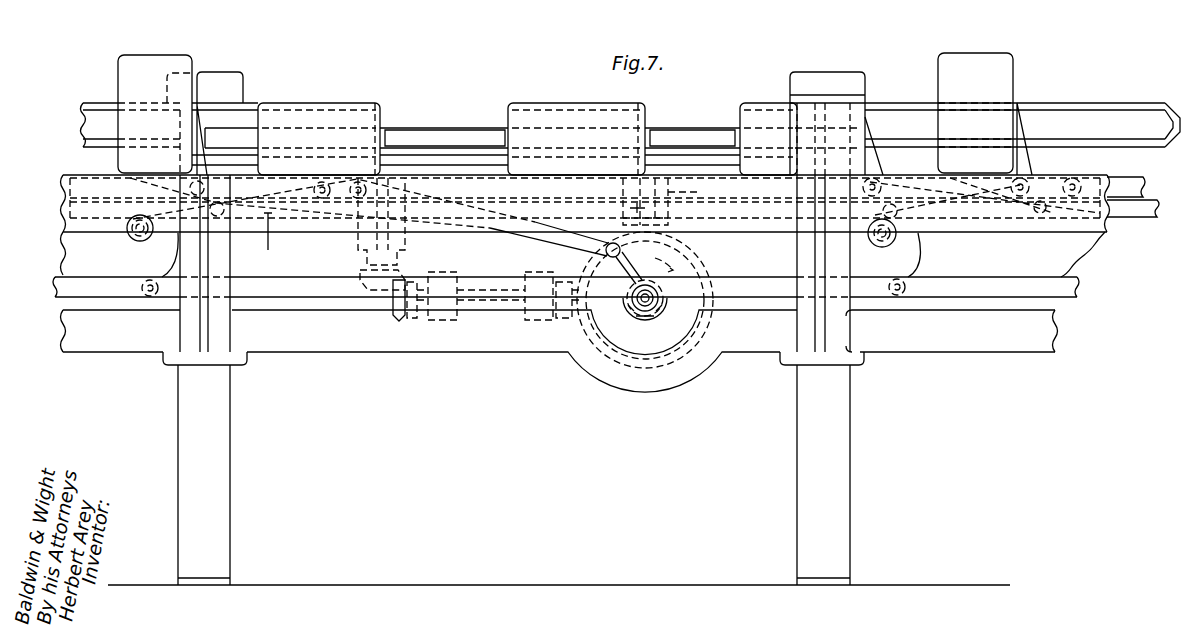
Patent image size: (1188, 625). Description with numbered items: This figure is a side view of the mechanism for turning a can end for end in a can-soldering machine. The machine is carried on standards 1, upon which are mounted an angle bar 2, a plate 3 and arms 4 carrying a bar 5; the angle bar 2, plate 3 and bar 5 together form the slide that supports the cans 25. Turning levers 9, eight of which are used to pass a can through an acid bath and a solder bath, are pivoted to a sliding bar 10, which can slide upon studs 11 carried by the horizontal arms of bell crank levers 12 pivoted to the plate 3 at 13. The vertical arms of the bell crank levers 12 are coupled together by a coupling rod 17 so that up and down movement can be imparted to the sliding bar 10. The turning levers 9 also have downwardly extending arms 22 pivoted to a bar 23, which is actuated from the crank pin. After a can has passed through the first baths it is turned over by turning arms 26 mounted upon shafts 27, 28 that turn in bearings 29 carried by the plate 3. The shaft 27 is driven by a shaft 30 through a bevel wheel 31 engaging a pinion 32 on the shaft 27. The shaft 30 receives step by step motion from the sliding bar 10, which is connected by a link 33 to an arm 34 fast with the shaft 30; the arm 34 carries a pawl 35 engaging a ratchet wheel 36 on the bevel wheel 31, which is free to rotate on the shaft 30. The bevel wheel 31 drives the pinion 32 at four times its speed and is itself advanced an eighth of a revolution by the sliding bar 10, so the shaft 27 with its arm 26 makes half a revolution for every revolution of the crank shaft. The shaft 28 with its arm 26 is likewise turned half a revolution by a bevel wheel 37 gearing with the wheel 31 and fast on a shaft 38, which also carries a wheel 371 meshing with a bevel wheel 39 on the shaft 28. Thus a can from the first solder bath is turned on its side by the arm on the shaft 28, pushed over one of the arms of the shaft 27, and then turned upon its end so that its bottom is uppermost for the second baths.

The standards 1 is at (222, 415).
The angle bar 2 is at (99, 118).
The plate 3 is at (80, 253).
The arms 4 is at (212, 255).
The bar 5 is at (63, 177).
The turning levers 9 is at (200, 130).
The sliding bar 10 is at (88, 178).
The studs 11 is at (323, 200).
The bell crank levers 12 is at (930, 243).
The pivot 13 is at (142, 278).
The coupling rod 17 is at (112, 288).
The downwardly extending arms 22 is at (875, 234).
The bar 23 is at (87, 222).
The cans 25 is at (182, 65).
The turning arms 26 is at (302, 130).
The shaft 27 is at (630, 208).
The shaft 28 is at (405, 245).
The bearings 29 is at (358, 210).
The shaft 30 is at (652, 307).
The bevel wheel 31 is at (703, 268).
The pinion 32 is at (665, 235).
The link 33 is at (530, 247).
The arm 34 is at (582, 263).
The pawl 35 is at (640, 263).
The ratchet wheel 36 is at (638, 320).
The bevel wheel 37 is at (577, 317).
The shaft 38 is at (487, 305).
The bevel wheel 39 is at (360, 272).
The wheel 371 is at (398, 320).